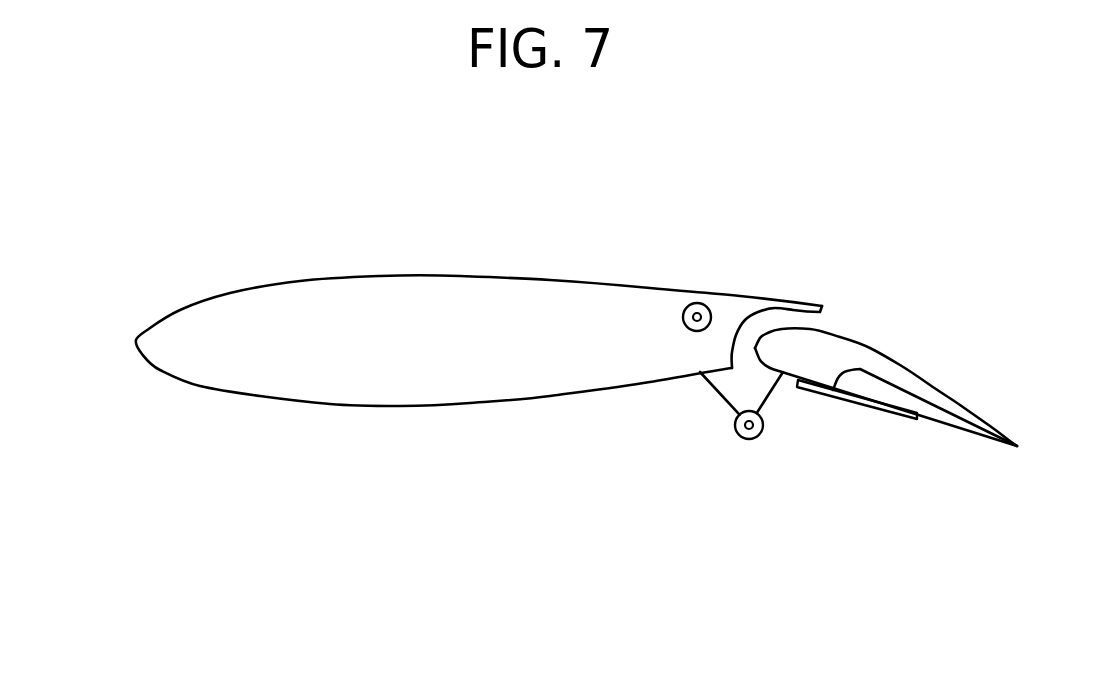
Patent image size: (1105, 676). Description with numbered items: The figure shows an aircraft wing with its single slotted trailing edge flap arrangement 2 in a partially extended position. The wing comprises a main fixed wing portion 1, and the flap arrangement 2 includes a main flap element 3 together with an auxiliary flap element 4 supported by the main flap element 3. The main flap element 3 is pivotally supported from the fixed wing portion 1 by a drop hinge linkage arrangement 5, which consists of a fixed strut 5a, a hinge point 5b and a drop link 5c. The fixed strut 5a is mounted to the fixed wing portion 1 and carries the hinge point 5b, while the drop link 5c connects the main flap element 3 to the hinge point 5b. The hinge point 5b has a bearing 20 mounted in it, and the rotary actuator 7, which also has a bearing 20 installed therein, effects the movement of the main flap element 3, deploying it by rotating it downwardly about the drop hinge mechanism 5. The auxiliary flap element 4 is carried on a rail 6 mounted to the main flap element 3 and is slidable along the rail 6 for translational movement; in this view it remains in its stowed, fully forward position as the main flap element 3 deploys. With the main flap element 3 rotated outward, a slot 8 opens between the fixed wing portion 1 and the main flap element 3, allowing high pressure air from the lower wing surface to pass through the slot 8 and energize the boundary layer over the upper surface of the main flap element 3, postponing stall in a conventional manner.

The main fixed wing portion 1 is at (467, 296).
The single slotted trailing edge flap arrangement 2 is at (921, 250).
The main flap element 3 is at (833, 348).
The auxiliary flap element 4 is at (930, 407).
The drop hinge linkage arrangement 5 is at (741, 441).
The fixed strut 5a is at (712, 391).
The hinge point 5b is at (749, 439).
The drop link 5c is at (770, 387).
The rail 6 is at (882, 408).
The rotary actuator 7 is at (697, 303).
The slot 8 is at (755, 332).
The bearing 20 is at (710, 314).